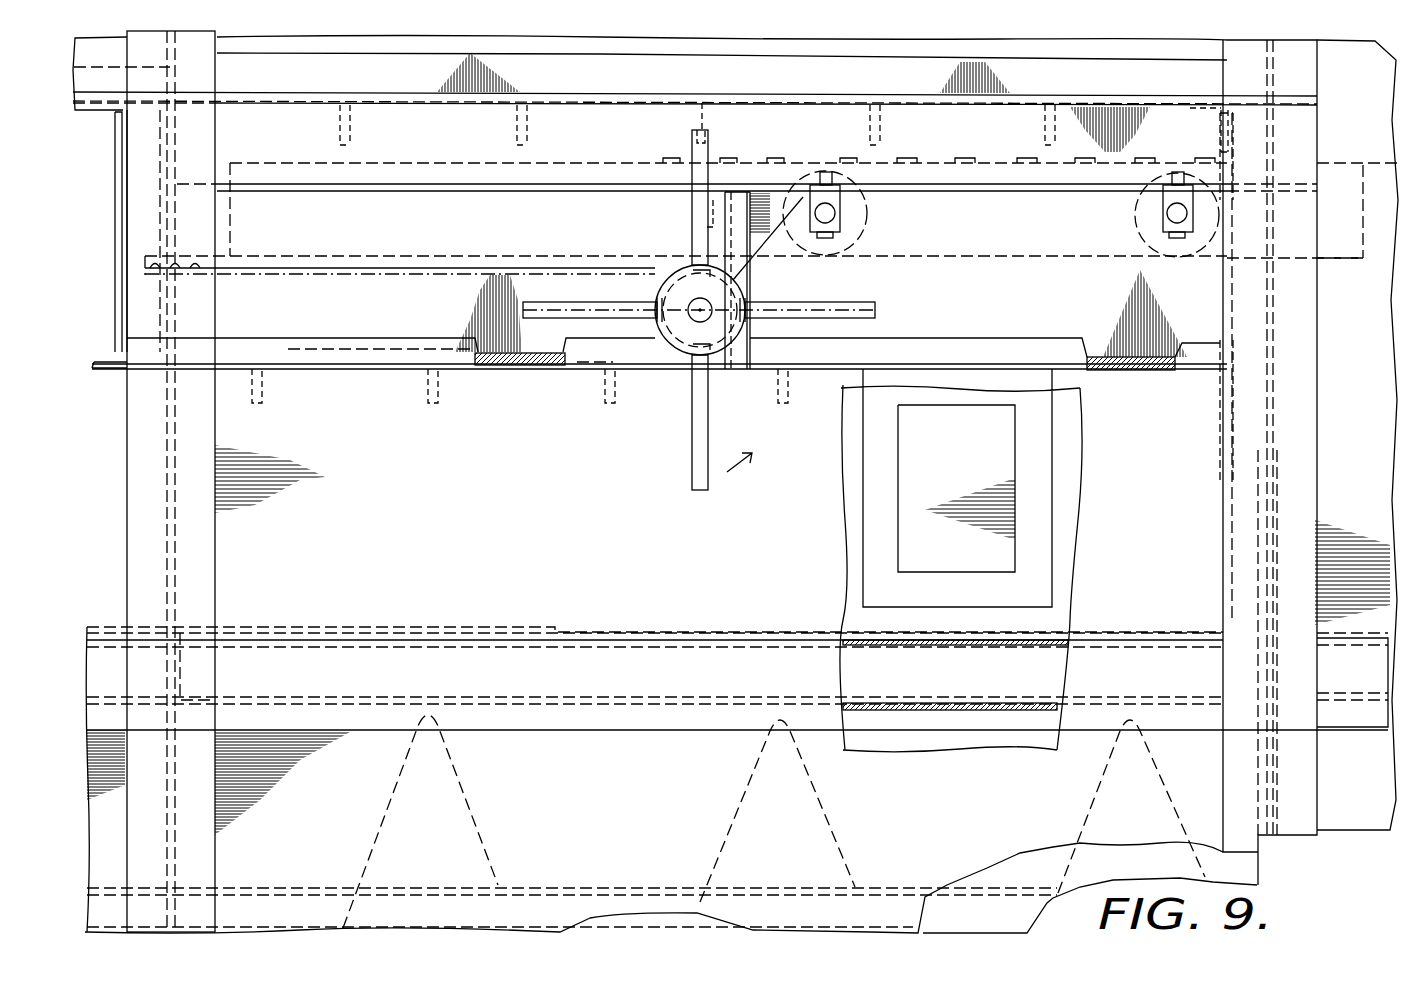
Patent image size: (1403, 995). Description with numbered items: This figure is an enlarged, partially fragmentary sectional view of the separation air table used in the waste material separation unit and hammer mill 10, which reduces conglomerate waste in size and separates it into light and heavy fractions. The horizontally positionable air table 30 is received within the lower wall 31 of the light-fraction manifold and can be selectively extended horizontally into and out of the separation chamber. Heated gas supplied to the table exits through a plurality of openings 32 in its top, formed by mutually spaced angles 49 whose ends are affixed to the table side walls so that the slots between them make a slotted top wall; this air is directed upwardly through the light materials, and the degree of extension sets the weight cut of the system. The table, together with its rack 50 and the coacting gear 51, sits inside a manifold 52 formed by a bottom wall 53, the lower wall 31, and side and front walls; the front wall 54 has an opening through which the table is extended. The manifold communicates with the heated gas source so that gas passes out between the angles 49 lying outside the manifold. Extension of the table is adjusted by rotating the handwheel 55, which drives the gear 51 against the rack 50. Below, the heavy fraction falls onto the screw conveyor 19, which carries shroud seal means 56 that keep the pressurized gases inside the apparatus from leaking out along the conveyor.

The waste material separation unit and hammer mill 10 is at (717, 83).
The screw conveyor 19 is at (470, 795).
The air table 30 is at (1095, 265).
The lower wall 31 is at (1140, 105).
The openings 32 is at (818, 170).
The angles 49 is at (917, 160).
The rack 50 is at (385, 277).
The gear 51 is at (672, 345).
The manifold 52 is at (550, 380).
The bottom wall 53 is at (490, 368).
The front wall 54 is at (1232, 309).
The handwheel 55 is at (692, 480).
The shroud seal means 56 is at (652, 648).